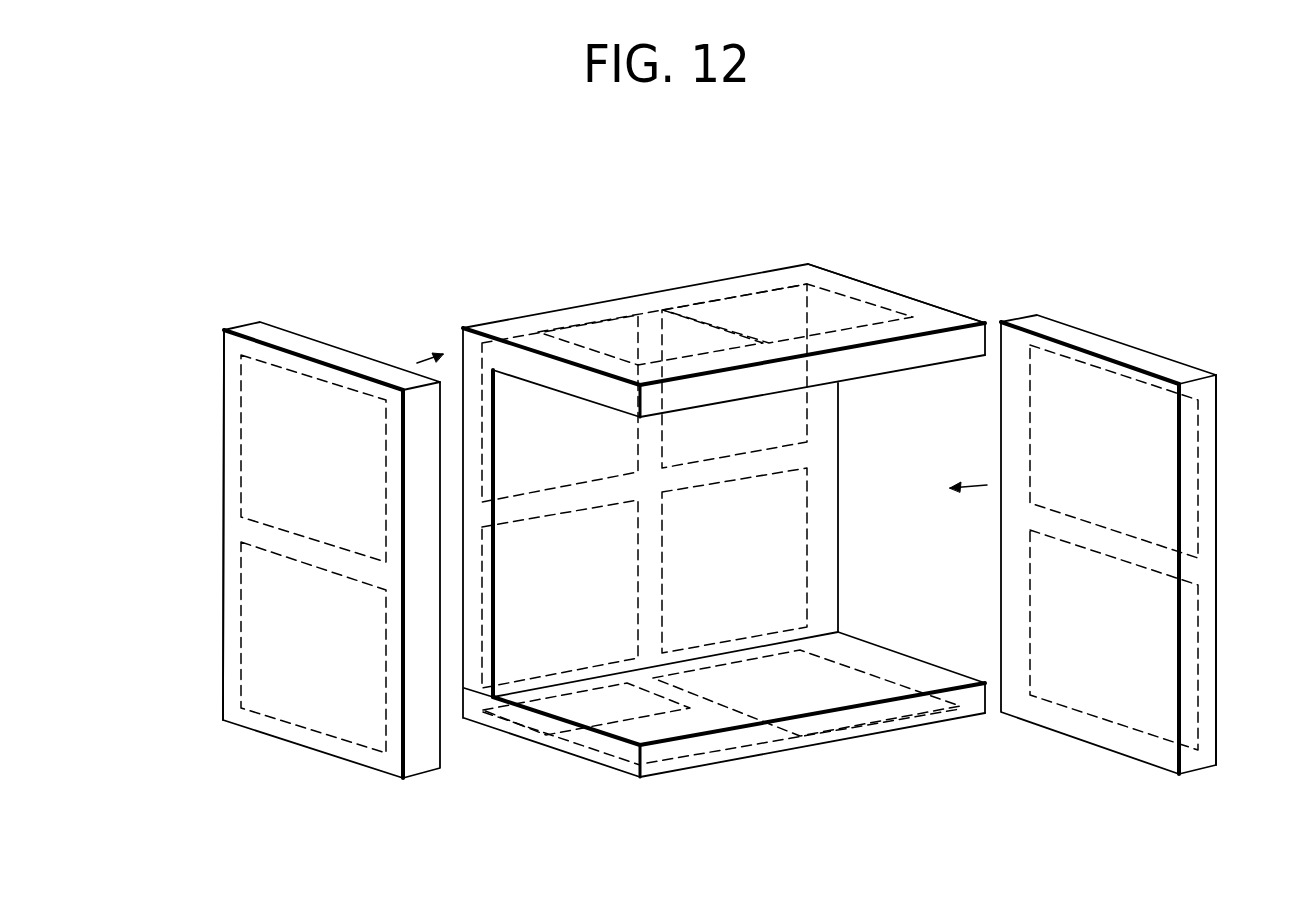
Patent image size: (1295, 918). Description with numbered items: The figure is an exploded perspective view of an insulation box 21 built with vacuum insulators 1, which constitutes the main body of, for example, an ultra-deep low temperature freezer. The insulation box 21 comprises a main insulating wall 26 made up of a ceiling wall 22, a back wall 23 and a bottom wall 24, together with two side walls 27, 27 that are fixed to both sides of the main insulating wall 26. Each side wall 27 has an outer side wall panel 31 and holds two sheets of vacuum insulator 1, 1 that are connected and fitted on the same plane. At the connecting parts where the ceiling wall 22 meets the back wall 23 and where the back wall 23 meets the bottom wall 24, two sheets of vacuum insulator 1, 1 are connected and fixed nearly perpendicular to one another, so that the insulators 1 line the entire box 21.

The vacuum insulator 1 is at (587, 345).
The insulation box 21 is at (677, 238).
The ceiling wall 22 is at (750, 280).
The back wall 23 is at (838, 487).
The bottom wall 24 is at (730, 763).
The main insulating wall 26 is at (863, 283).
The side wall 27 is at (297, 332).
The outer side wall panel 31 is at (224, 362).